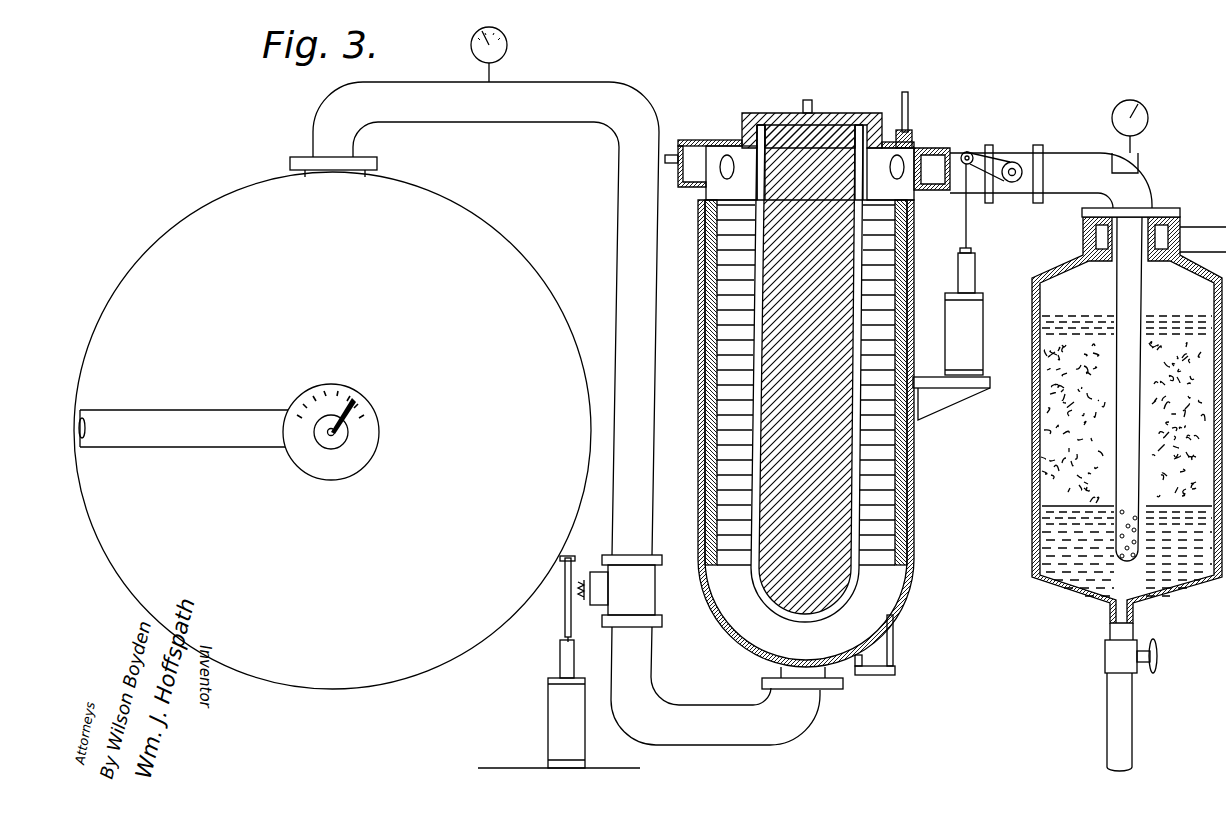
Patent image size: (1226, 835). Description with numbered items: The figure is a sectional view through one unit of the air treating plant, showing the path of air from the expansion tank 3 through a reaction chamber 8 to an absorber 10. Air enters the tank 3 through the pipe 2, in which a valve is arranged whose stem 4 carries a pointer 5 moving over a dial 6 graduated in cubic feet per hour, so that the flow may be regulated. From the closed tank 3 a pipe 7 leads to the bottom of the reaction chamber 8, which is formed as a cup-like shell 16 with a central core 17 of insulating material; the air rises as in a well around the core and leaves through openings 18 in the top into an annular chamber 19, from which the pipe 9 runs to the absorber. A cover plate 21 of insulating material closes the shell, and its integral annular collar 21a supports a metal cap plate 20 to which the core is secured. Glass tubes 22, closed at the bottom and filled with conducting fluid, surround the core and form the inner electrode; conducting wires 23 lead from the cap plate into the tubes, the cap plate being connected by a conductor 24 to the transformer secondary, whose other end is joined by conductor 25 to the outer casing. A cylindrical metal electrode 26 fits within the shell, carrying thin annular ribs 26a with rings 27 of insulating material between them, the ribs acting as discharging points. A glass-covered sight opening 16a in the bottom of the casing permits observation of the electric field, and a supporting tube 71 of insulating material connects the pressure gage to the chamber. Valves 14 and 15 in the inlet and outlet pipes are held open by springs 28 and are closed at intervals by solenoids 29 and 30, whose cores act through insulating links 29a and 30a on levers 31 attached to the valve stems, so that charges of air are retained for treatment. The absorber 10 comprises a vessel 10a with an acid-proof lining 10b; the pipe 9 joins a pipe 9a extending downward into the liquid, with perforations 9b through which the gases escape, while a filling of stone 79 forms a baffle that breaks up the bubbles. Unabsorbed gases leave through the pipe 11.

The pipe 2 is at (219, 424).
The expansion tank 3 is at (332, 430).
The valve stem 4 is at (346, 445).
The pointer 5 is at (352, 410).
The dial 6 is at (380, 437).
The pipe 7 is at (500, 122).
The reaction chamber 8 is at (704, 422).
The pipe 9 is at (1068, 162).
The pipe 9a is at (1132, 293).
The perforations 9b is at (1118, 546).
The absorber 10 is at (1040, 487).
The vessel 10a is at (1040, 529).
The acid-proof lining 10b is at (1040, 567).
The pipe 11 is at (1207, 243).
The valve 14 is at (640, 591).
The valve 15 is at (1018, 150).
The cup-like shell 16 is at (912, 482).
The sight opening 16a is at (898, 673).
The central core 17 is at (807, 369).
The openings 18 is at (920, 168).
The annular chamber 19 is at (952, 152).
The cap plate 20 is at (835, 125).
The cover plate 21 is at (712, 140).
The annular collar 21a is at (906, 92).
The glass tubes 22 is at (858, 334).
The conducting wires 23 is at (766, 126).
The conductor 24 is at (814, 64).
The conductor 25 is at (672, 155).
The cylindrical metal electrode 26 is at (710, 342).
The annular ribs 26a is at (894, 530).
The rings 27 is at (806, 385).
The spring 28 is at (573, 580).
The solenoid 29 is at (549, 711).
The link 29a is at (563, 612).
The solenoid 30 is at (978, 317).
The link 30a is at (972, 229).
The lever 31 is at (565, 579).
The supporting tube 71 is at (910, 100).
The filling of stone or lumpy substance 79 is at (1040, 445).